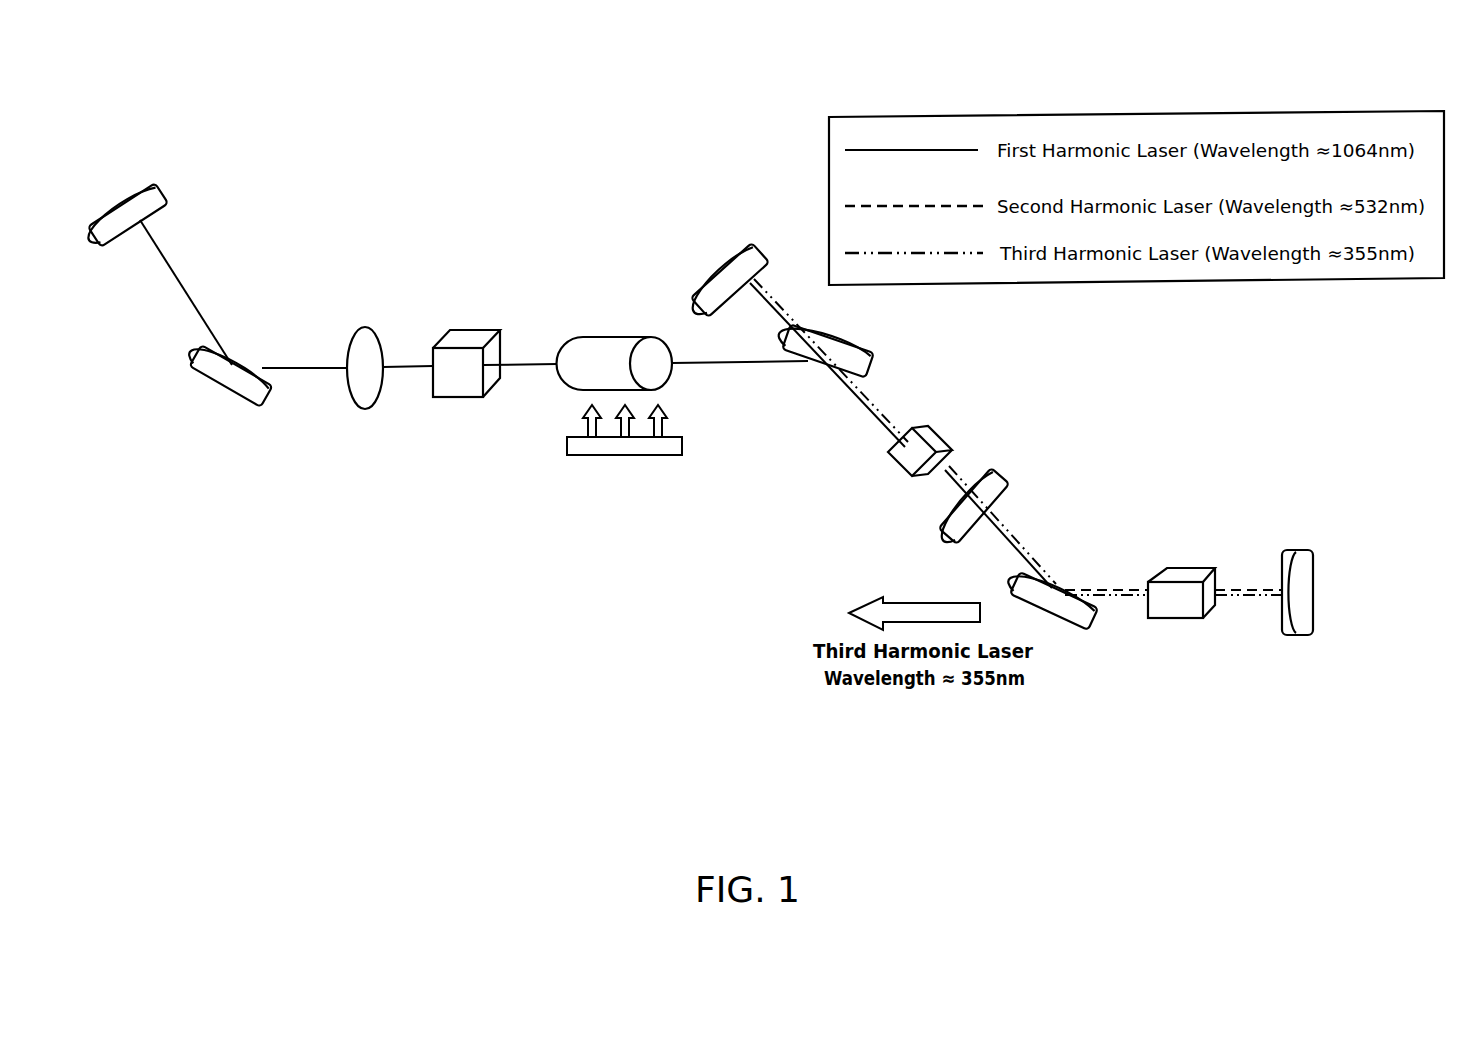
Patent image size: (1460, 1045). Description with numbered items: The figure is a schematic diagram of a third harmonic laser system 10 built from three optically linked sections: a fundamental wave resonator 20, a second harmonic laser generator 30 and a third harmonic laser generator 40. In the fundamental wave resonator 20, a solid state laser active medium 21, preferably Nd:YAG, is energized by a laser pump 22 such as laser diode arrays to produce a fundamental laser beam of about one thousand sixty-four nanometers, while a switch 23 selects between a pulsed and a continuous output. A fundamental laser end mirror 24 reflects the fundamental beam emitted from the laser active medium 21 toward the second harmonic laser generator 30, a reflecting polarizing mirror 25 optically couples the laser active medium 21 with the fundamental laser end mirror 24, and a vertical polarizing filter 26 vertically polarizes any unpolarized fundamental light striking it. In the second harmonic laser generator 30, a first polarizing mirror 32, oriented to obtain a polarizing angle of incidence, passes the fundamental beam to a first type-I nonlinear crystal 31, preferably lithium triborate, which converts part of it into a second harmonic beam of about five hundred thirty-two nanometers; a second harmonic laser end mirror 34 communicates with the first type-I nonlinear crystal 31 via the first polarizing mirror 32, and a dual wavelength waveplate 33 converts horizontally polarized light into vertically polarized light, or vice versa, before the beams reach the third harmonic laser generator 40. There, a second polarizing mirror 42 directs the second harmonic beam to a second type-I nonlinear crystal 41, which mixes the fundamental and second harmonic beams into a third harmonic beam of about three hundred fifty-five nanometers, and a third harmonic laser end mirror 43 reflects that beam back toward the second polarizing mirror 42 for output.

The third harmonic laser system 10 is at (316, 571).
The fundamental wave resonator 20 is at (428, 438).
The laser active medium 21 is at (582, 372).
The laser pump 22 is at (617, 443).
The switch 23 is at (465, 355).
The fundamental laser end mirror 24 is at (120, 210).
The reflecting polarizing mirror 25 is at (225, 378).
The vertical polarizing filter 26 is at (363, 355).
The second harmonic laser generator 30 is at (980, 333).
The first type-I nonlinear crystal 31 is at (900, 448).
The first polarizing mirror 32 is at (848, 352).
The dual wavelength waveplate 33 is at (982, 503).
The second harmonic laser end mirror 34 is at (748, 265).
The third harmonic laser generator 40 is at (1163, 693).
The second type-I nonlinear crystal 41 is at (1180, 593).
The second polarizing mirror 42 is at (1053, 610).
The third harmonic laser end mirror 43 is at (1297, 572).